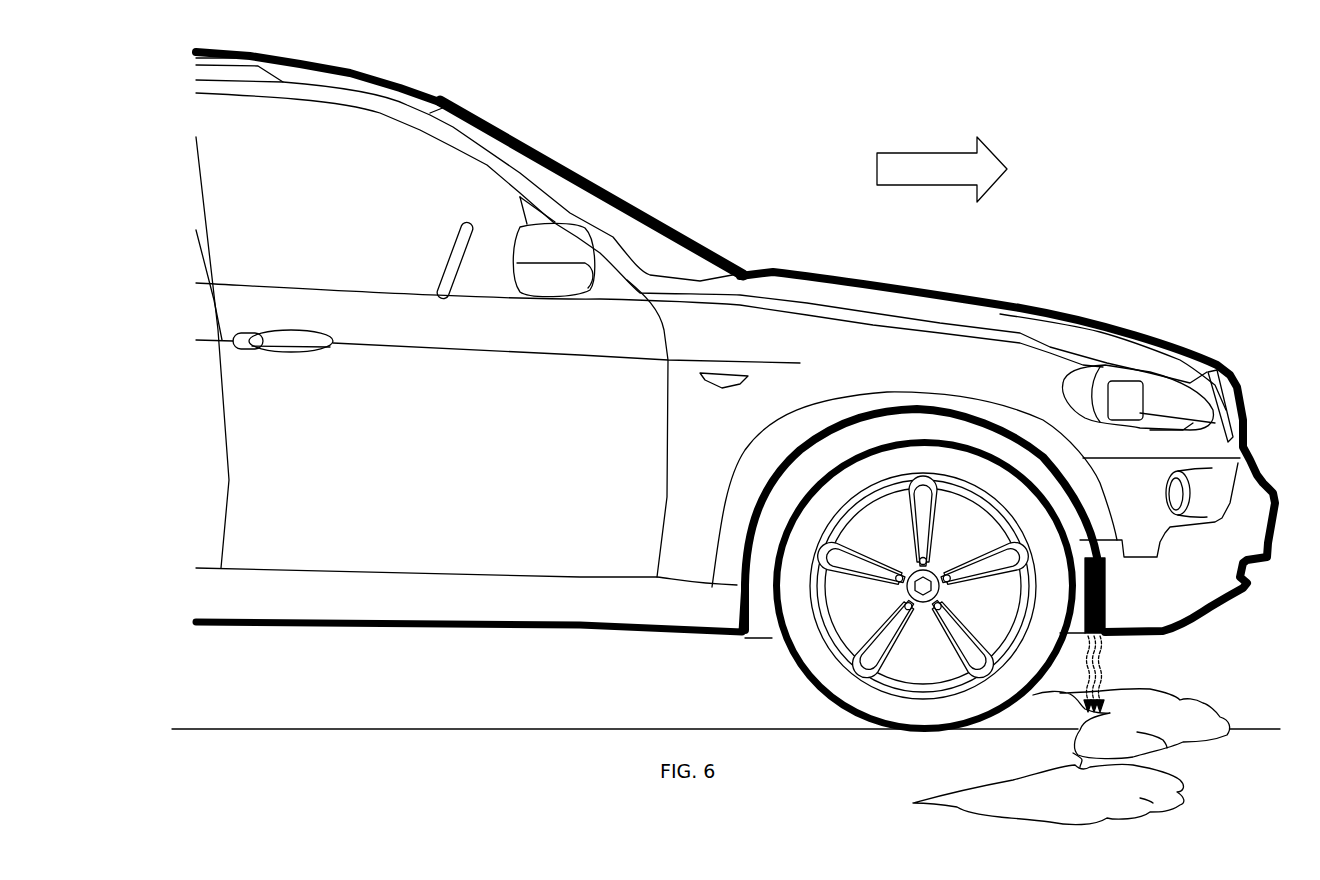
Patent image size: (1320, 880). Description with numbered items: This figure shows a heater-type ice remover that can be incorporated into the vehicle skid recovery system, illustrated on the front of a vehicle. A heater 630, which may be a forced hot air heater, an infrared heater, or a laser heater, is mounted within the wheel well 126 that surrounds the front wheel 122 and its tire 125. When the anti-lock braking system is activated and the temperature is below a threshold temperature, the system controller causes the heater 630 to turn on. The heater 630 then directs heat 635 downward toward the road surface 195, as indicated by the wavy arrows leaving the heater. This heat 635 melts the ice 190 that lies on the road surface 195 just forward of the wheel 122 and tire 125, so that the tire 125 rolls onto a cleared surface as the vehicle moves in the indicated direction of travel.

The wheel 122 is at (893, 692).
The tire 125 is at (820, 690).
The wheel well 126 is at (957, 433).
The ice 190 is at (1213, 720).
The road surface 195 is at (728, 729).
The heater 630 is at (1092, 557).
The heat 635 is at (1103, 673).